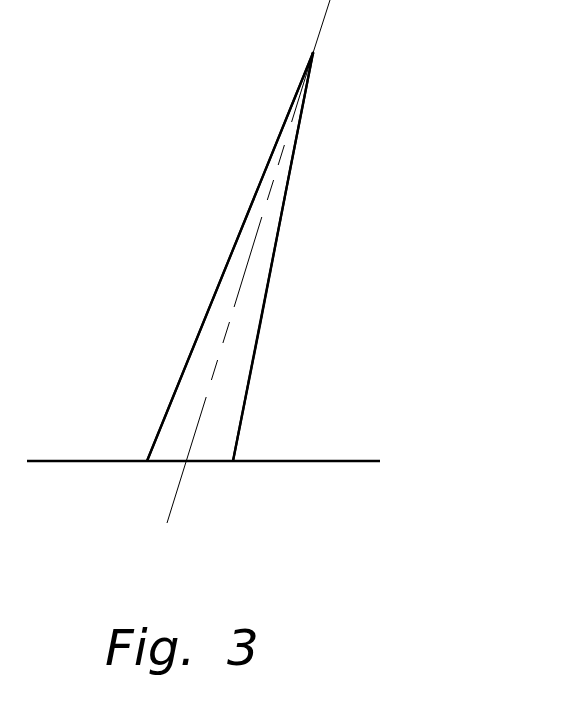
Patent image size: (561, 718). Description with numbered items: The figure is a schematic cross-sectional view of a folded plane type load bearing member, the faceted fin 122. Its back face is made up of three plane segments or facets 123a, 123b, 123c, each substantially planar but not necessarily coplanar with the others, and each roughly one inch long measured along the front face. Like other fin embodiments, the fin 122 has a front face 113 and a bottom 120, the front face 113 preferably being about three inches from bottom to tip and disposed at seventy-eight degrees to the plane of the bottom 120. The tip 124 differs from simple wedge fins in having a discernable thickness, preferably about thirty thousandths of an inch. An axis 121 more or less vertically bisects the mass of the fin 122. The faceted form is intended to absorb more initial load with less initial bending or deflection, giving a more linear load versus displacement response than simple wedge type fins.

The front face 113 is at (233, 247).
The bottom 120 is at (215, 462).
The axis 121 is at (329, 6).
The faceted fin 122 is at (179, 375).
The plane segment or facet 123a is at (305, 117).
The plane segment or facet 123b is at (275, 277).
The plane segment or facet 123c is at (252, 382).
The tip 124 is at (315, 53).